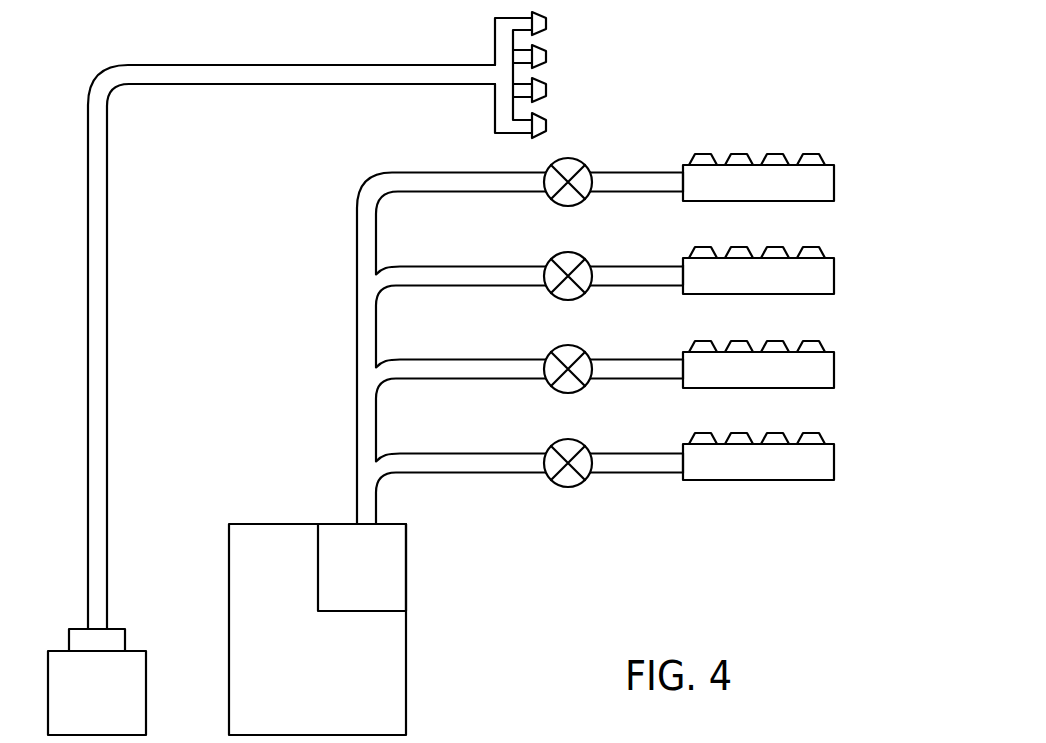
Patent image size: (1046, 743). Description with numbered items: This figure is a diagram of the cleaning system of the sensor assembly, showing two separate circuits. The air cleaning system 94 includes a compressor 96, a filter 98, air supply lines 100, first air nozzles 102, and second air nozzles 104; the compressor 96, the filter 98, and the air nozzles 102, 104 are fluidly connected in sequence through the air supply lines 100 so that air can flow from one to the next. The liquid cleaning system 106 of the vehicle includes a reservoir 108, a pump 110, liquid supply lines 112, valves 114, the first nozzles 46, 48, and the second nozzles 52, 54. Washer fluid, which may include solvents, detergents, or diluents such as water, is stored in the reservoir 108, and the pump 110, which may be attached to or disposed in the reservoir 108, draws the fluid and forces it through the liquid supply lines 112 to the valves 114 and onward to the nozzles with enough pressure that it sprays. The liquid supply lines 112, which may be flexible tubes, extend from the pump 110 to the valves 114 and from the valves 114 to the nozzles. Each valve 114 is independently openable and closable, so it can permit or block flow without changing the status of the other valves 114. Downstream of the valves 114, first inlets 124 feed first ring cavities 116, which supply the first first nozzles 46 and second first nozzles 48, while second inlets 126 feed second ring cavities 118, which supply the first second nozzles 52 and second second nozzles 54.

The first first nozzles 46 is at (714, 160).
The second first nozzles 48 is at (741, 153).
The first second nozzles 52 is at (714, 347).
The second second nozzles 54 is at (741, 340).
The air cleaning system 94 is at (55, 495).
The compressor 96 is at (146, 692).
The filter 98 is at (125, 640).
The air supply lines 100 is at (88, 357).
The first air nozzles 102 is at (546, 23).
The second air nozzles 104 is at (547, 126).
The liquid cleaning system 106 is at (560, 525).
The reservoir 108 is at (406, 672).
The pump 110 is at (406, 563).
The liquid supply lines 112 is at (357, 357).
The valves 114 is at (555, 200).
The first ring cavity 116 is at (834, 180).
The second ring cavity 118 is at (834, 367).
The first inlet 124 is at (682, 165).
The second inlet 126 is at (682, 352).